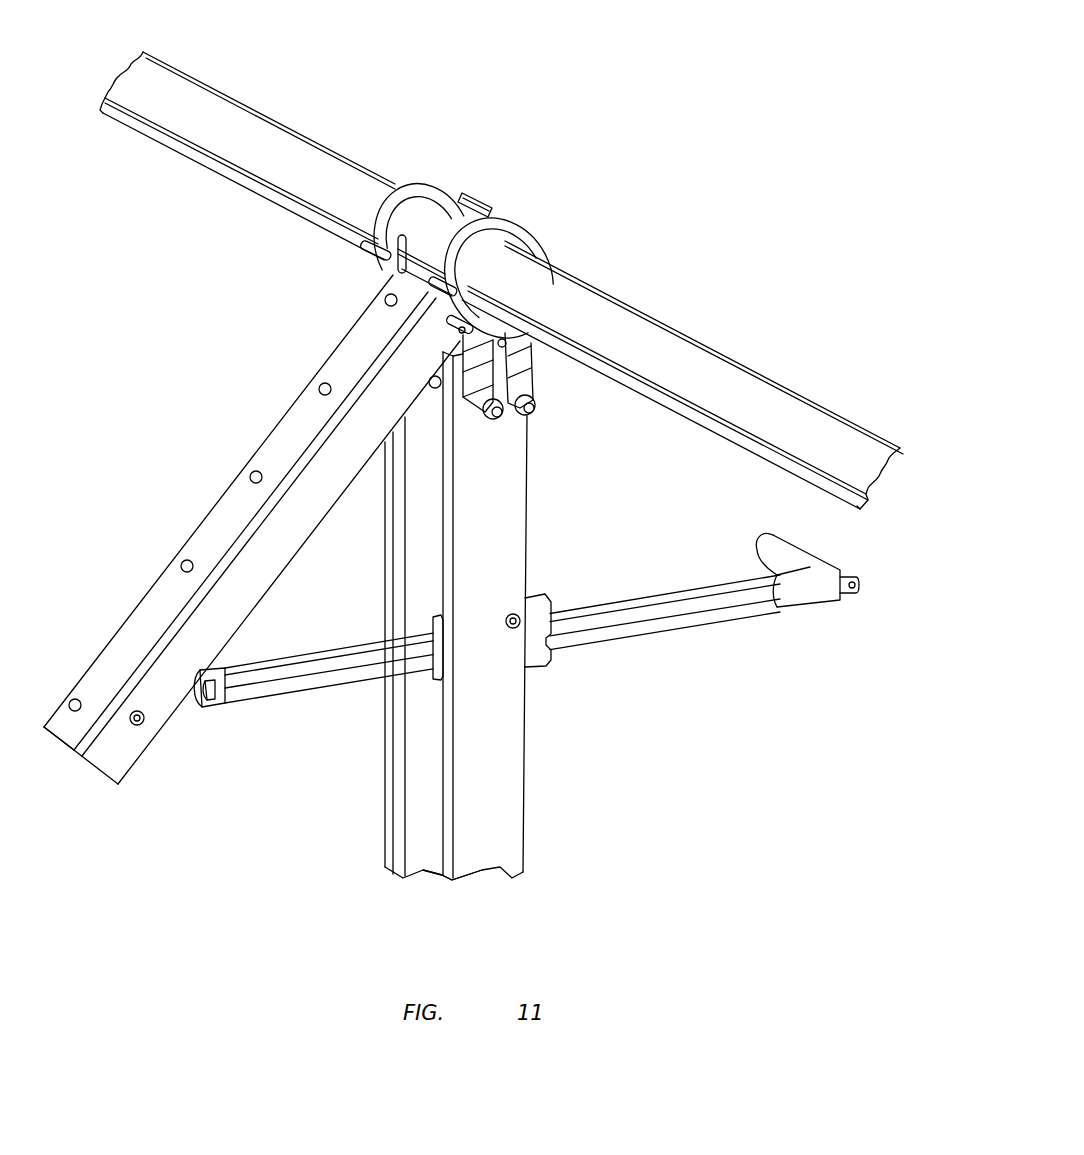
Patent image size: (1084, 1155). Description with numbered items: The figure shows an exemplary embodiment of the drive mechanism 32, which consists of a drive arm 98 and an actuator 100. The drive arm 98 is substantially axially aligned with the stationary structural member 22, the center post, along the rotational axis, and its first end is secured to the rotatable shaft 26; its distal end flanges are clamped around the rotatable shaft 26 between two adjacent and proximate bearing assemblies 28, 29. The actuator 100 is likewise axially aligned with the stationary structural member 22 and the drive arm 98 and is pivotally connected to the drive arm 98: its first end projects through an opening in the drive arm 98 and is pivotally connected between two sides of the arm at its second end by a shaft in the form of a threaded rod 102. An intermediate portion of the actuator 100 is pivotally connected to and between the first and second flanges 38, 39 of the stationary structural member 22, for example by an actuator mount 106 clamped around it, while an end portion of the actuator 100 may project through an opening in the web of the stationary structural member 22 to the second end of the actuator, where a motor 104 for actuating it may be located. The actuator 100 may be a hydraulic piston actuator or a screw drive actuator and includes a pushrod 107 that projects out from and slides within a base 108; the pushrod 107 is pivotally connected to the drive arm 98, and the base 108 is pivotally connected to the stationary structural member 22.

The stationary structural member 22 is at (540, 832).
The rotatable shaft 26 is at (680, 330).
The bearing assembly 28 is at (440, 190).
The bearing assembly 29 is at (518, 225).
The drive mechanism 32 is at (690, 147).
The first flange 38 is at (502, 880).
The second flange 39 is at (383, 850).
The drive arm 98 is at (260, 440).
The actuator 100 is at (648, 638).
The threaded rod 102 is at (141, 728).
The motor 104 is at (818, 605).
The actuator mount 106 is at (550, 598).
The pushrod 107 is at (198, 712).
The base 108 is at (590, 645).